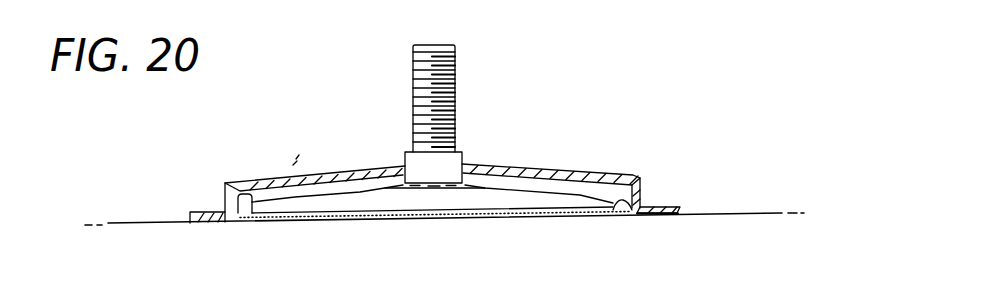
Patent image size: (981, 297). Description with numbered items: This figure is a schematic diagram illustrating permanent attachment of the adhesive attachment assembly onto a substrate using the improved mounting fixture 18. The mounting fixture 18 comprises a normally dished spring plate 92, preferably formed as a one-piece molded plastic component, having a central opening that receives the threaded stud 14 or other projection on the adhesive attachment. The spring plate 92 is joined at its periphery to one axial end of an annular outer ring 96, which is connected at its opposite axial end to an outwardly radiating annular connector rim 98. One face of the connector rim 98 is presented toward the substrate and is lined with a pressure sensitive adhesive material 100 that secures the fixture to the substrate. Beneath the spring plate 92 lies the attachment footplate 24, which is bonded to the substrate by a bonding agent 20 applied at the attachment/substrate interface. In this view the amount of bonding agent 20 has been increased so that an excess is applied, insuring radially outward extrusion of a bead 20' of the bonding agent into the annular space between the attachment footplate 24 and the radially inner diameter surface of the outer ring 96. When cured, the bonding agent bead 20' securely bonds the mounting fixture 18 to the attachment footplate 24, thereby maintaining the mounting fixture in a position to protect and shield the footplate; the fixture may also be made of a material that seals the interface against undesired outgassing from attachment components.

The mounting fixture 18 is at (320, 112).
The threaded stud 14 is at (457, 97).
The spring plate 92 is at (552, 168).
The outer ring 96 is at (643, 188).
The connector rim 98 is at (667, 207).
The pressure sensitive adhesive material 100 is at (663, 215).
The attachment footplate 24 is at (488, 199).
The bonding agent 20 is at (435, 235).
The bead 20' is at (191, 199).